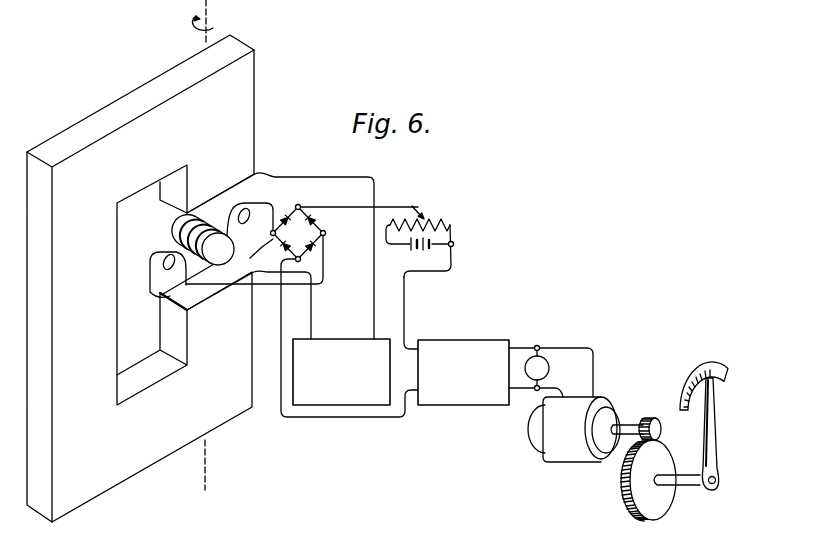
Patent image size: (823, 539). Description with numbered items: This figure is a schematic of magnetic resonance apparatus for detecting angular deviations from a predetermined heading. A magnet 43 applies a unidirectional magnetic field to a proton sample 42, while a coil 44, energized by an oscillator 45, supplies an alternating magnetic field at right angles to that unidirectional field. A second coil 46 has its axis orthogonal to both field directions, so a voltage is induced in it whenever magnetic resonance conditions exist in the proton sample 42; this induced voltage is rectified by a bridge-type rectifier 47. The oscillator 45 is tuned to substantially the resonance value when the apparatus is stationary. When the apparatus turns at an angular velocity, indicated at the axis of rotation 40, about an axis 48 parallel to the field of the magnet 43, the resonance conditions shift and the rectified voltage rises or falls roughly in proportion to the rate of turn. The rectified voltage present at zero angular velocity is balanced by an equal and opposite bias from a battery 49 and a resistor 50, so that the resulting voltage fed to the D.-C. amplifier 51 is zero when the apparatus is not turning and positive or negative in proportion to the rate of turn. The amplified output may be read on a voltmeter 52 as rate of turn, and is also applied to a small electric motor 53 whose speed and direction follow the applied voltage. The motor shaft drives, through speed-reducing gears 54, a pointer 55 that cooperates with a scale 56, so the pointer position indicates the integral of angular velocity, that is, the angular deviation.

The axis of rotation 40 is at (212, 7).
The proton sample 42 is at (225, 249).
The magnet 43 is at (245, 97).
The coil 44 is at (186, 232).
The oscillator 45 is at (339, 339).
The second coil 46 is at (247, 216).
The bridge-type rectifier 47 is at (323, 226).
The axis 48 is at (212, 462).
The battery 49 is at (412, 246).
The resistor 50 is at (424, 212).
The D.-C. amplifier 51 is at (461, 341).
The voltmeter 52 is at (549, 368).
The electric motor 53 is at (565, 456).
The speed-reducing gears 54 is at (662, 428).
The pointer 55 is at (718, 430).
The scale 56 is at (721, 365).